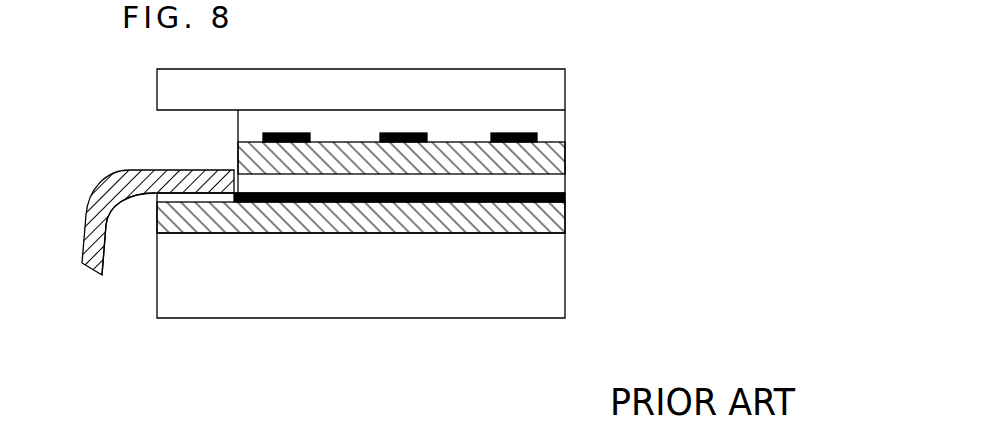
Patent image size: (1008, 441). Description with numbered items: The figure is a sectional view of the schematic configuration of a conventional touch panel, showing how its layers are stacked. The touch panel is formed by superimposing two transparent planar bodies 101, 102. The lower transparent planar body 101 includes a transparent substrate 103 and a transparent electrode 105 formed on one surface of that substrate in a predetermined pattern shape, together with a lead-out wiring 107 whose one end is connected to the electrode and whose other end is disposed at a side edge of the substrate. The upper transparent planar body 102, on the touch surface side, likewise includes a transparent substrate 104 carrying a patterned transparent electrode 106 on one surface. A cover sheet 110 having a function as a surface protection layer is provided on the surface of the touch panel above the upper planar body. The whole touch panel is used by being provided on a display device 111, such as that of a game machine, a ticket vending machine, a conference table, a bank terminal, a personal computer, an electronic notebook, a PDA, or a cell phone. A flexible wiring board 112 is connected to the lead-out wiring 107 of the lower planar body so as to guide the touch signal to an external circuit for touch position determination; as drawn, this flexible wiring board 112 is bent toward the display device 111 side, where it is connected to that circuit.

The cover sheet 110 is at (565, 83).
The display device 111 is at (565, 292).
The flexible wiring board 112 is at (110, 175).
The lead-out wiring 107 is at (152, 197).
The transparent planar body 102 is at (452, 151).
The transparent electrode 106 is at (538, 137).
The transparent substrate 104 is at (565, 158).
The transparent planar body 101 is at (422, 223).
The transparent electrode 105 is at (565, 197).
The transparent substrate 103 is at (565, 222).